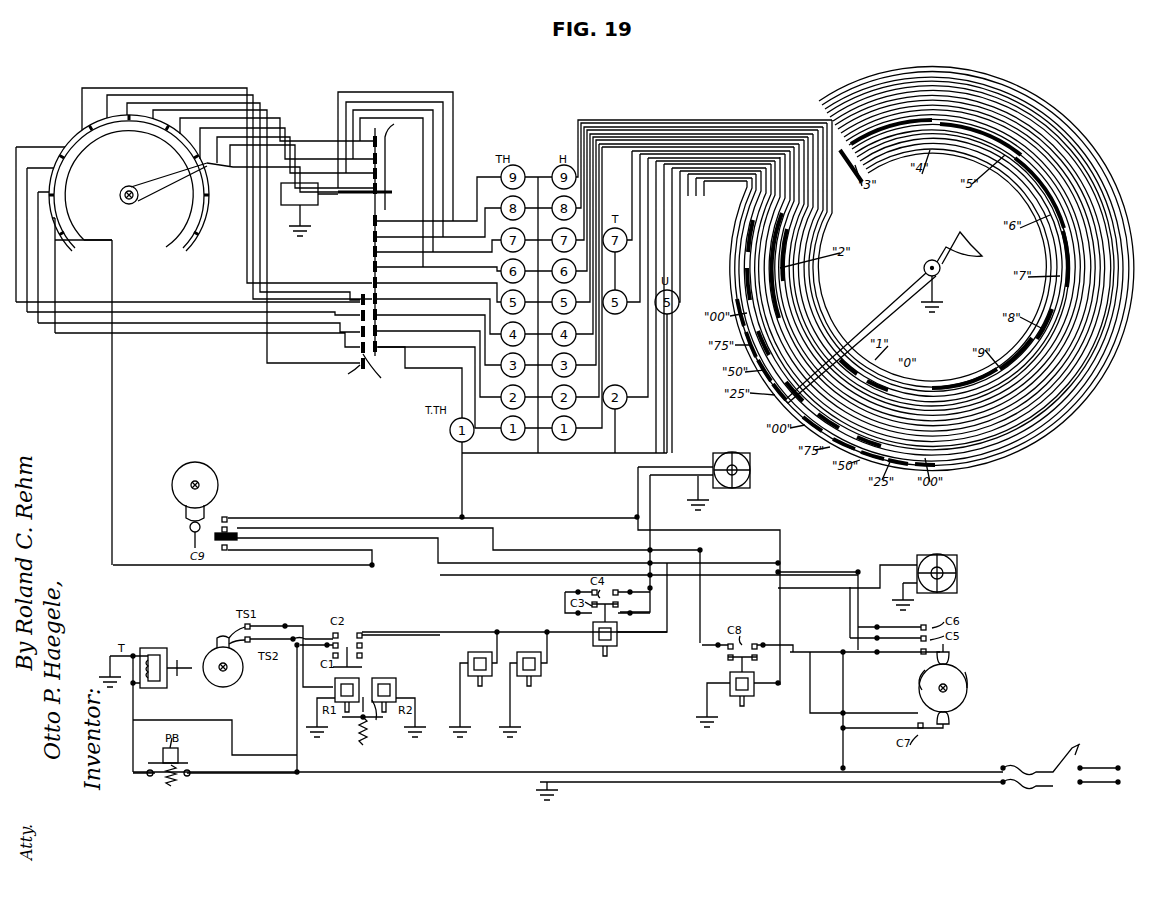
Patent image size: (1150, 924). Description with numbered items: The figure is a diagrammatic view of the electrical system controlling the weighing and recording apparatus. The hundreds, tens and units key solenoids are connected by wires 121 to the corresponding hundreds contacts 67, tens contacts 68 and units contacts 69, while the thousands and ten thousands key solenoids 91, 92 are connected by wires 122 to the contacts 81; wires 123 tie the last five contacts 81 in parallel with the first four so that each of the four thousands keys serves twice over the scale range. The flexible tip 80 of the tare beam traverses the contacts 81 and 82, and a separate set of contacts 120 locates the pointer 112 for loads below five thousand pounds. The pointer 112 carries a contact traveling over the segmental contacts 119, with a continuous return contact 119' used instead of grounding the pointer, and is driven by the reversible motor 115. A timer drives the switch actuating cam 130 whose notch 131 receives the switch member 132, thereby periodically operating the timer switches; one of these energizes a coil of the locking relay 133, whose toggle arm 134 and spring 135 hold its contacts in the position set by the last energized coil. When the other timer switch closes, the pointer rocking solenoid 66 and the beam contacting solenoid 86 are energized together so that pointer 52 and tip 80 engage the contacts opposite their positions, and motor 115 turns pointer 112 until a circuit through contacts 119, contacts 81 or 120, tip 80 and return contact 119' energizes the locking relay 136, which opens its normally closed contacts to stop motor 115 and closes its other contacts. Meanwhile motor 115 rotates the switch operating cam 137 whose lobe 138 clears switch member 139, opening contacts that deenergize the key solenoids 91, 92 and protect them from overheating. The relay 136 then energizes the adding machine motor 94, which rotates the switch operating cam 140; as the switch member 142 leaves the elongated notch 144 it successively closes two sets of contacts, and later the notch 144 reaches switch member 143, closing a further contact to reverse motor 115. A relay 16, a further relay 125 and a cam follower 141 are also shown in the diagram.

The pointer 112 is at (165, 190).
The segmental contacts 119 is at (140, 192).
The return contact 119' is at (129, 202).
The relay 16 is at (309, 212).
The flexible tip 80 is at (347, 196).
The contacts 81 is at (377, 134).
The contacts 82 is at (399, 164).
The contacts 120 is at (358, 332).
The wires 121 is at (725, 118).
The wires 122 is at (485, 200).
The wires 123 is at (438, 91).
The hundreds contacts 67 is at (790, 292).
The tens contacts 68 is at (748, 284).
The units contacts 69 is at (748, 226).
The pointer 52 is at (912, 294).
The solenoids 91 is at (580, 432).
The armature pins 92 is at (552, 408).
The reversible motor 115 is at (750, 485).
The switch operating cam 137 is at (217, 477).
The lobe 138 is at (207, 505).
The switch member 139 is at (205, 540).
The electric motor 94 is at (957, 573).
The switch operating cam 140 is at (967, 692).
The cam follower 141 is at (967, 676).
The switch member 142 is at (950, 658).
The switch member 143 is at (943, 728).
The notch 144 is at (920, 679).
The locking relay 136 is at (613, 645).
The pointer rocking solenoid 66 is at (472, 686).
The beam contacting solenoid 86 is at (541, 674).
The relay 125 is at (756, 692).
The switch actuating cam 130 is at (202, 660).
The notch 131 is at (212, 684).
The switch member 132 is at (222, 636).
The locking relay 133 is at (374, 722).
The toggle arm 134 is at (358, 720).
The spring 135 is at (378, 678).